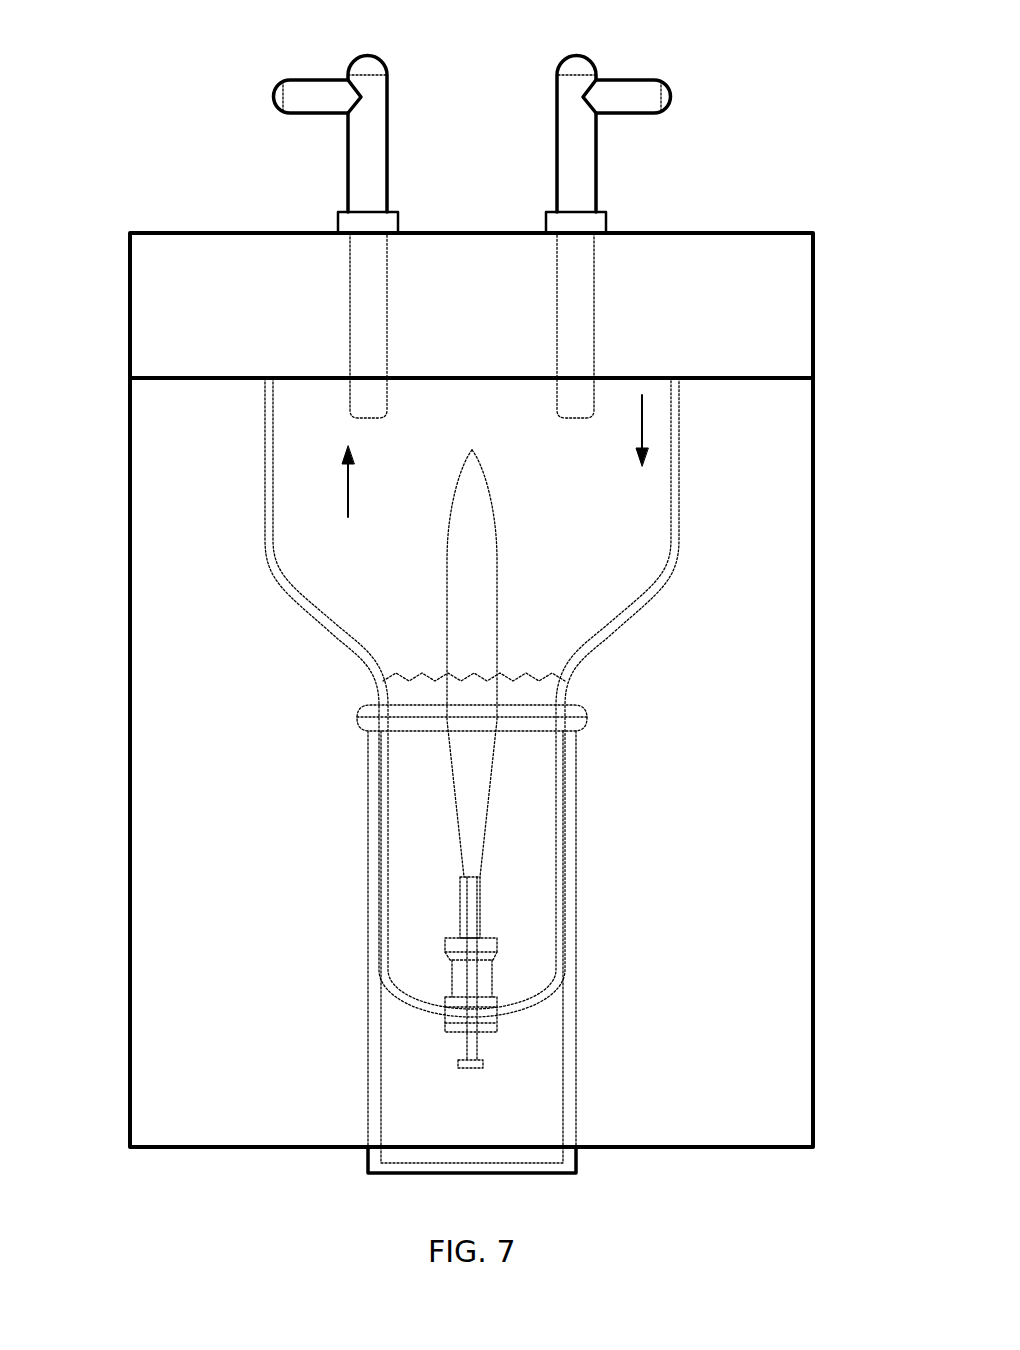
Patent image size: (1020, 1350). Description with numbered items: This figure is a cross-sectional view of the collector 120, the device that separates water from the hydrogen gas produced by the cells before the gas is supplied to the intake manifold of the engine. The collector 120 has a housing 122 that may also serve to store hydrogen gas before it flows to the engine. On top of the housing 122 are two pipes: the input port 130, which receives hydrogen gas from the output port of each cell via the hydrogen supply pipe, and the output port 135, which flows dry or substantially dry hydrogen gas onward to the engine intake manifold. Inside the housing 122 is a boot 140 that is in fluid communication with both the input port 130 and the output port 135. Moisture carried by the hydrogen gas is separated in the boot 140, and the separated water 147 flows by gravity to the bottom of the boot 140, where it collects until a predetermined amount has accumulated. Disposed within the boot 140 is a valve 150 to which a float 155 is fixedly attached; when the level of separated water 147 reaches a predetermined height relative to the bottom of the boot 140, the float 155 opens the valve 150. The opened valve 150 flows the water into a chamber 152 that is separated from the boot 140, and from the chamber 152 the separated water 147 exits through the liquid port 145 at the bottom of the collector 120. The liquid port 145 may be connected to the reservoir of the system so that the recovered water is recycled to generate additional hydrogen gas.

The collector 120 is at (491, 22).
The housing 122 is at (813, 667).
The input port 130 is at (640, 95).
The output port 135 is at (295, 95).
The boot 140 is at (272, 490).
The liquid port 145 is at (502, 1177).
The separated water 147 is at (407, 680).
The valve 150 is at (473, 993).
The chamber 152 is at (425, 1105).
The float 155 is at (493, 548).